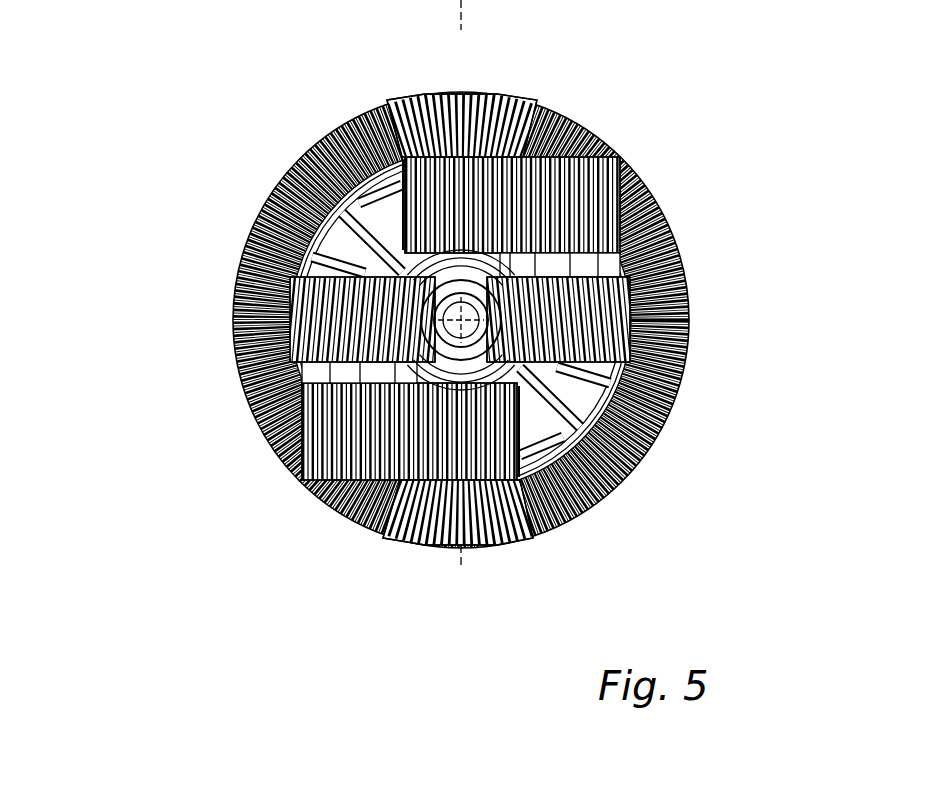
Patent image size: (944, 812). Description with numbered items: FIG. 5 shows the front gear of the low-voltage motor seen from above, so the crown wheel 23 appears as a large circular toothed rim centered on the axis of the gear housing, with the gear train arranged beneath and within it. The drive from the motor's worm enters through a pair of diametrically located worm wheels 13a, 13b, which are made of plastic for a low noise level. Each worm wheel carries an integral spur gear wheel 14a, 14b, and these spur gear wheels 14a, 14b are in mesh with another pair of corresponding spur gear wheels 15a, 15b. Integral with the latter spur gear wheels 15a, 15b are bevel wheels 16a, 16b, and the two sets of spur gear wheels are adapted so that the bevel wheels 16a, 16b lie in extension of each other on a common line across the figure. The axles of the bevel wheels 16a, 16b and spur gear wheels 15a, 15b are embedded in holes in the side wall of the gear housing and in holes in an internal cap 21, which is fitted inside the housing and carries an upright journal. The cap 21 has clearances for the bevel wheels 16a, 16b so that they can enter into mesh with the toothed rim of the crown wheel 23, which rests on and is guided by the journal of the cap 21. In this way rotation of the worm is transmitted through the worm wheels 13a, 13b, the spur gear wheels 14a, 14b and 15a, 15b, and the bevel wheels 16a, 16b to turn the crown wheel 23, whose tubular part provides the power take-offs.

The worm wheel 13a is at (617, 308).
The worm wheel 13b is at (302, 335).
The spur gear wheel 14a is at (603, 178).
The spur gear wheel 14b is at (315, 438).
The spur gear wheel 15a is at (400, 222).
The spur gear wheel 15b is at (522, 470).
The bevel wheel 16a is at (540, 95).
The bevel wheel 16b is at (425, 545).
The internal cap 21 is at (346, 284).
The crown wheel 23 is at (245, 230).